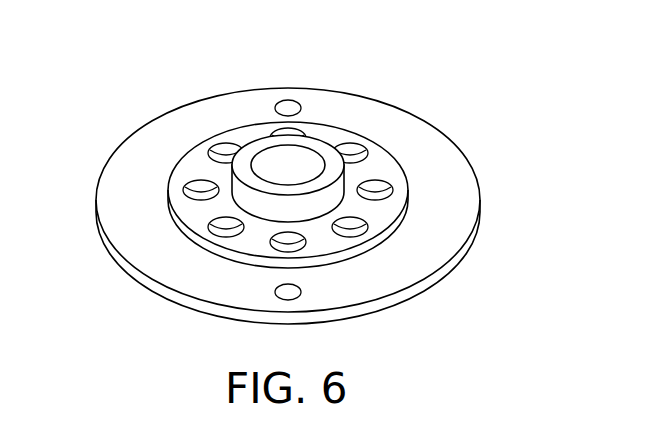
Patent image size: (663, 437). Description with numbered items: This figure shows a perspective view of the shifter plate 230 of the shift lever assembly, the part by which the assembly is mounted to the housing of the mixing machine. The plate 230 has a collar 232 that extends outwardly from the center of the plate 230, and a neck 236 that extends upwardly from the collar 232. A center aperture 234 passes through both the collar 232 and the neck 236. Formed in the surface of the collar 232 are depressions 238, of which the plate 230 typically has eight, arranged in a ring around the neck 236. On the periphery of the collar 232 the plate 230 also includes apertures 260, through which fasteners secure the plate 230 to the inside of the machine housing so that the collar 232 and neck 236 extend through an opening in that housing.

The plate 230 is at (448, 222).
The collar 232 is at (380, 168).
The center aperture 234 is at (290, 156).
The neck 236 is at (330, 153).
The depressions 238 is at (193, 181).
The apertures 260 is at (287, 100).